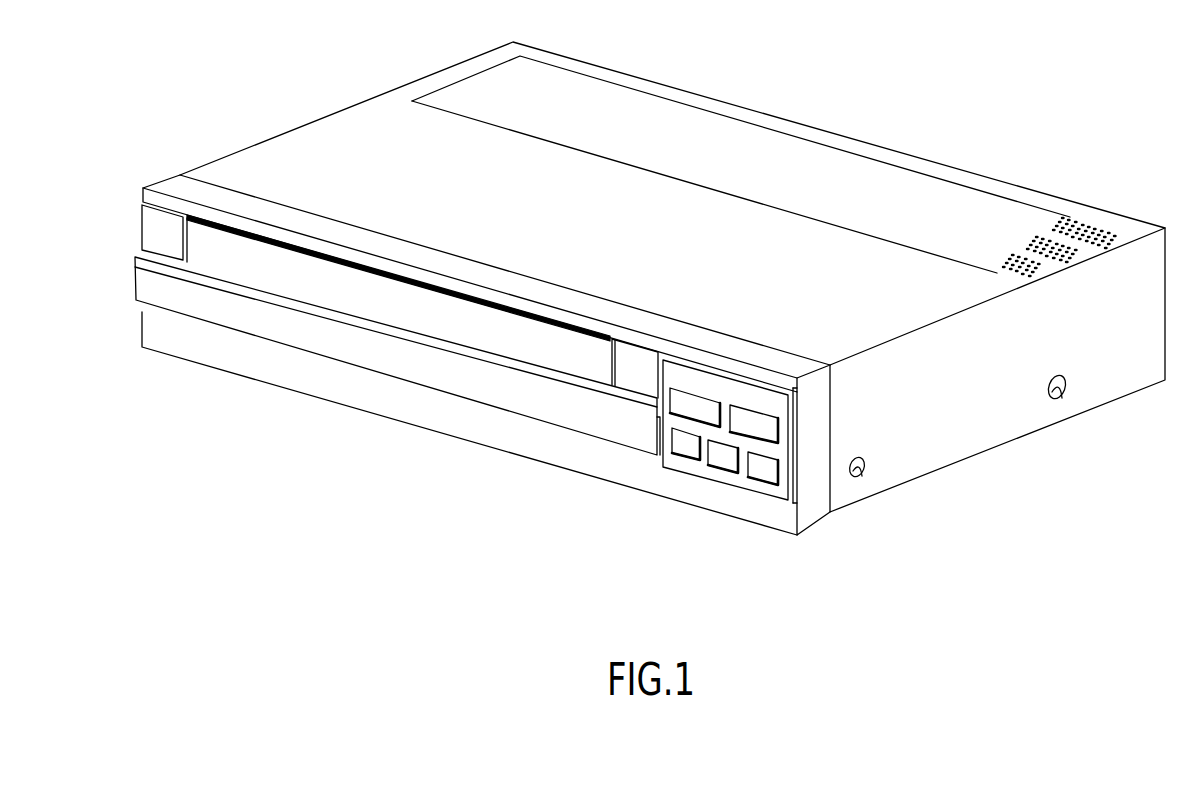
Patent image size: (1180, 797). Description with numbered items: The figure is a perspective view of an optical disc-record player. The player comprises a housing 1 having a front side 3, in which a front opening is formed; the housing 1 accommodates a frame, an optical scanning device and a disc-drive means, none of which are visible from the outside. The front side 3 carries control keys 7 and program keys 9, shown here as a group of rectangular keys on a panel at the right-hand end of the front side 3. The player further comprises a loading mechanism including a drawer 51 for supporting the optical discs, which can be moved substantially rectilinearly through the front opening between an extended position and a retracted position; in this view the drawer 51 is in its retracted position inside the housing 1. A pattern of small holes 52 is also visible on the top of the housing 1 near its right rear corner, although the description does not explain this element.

The housing 1 is at (1010, 425).
The front side 3 is at (400, 402).
The control keys 7 is at (748, 425).
The program keys 9 is at (767, 473).
The drawer 51 is at (285, 273).
The ventilation holes 52 is at (1093, 208).